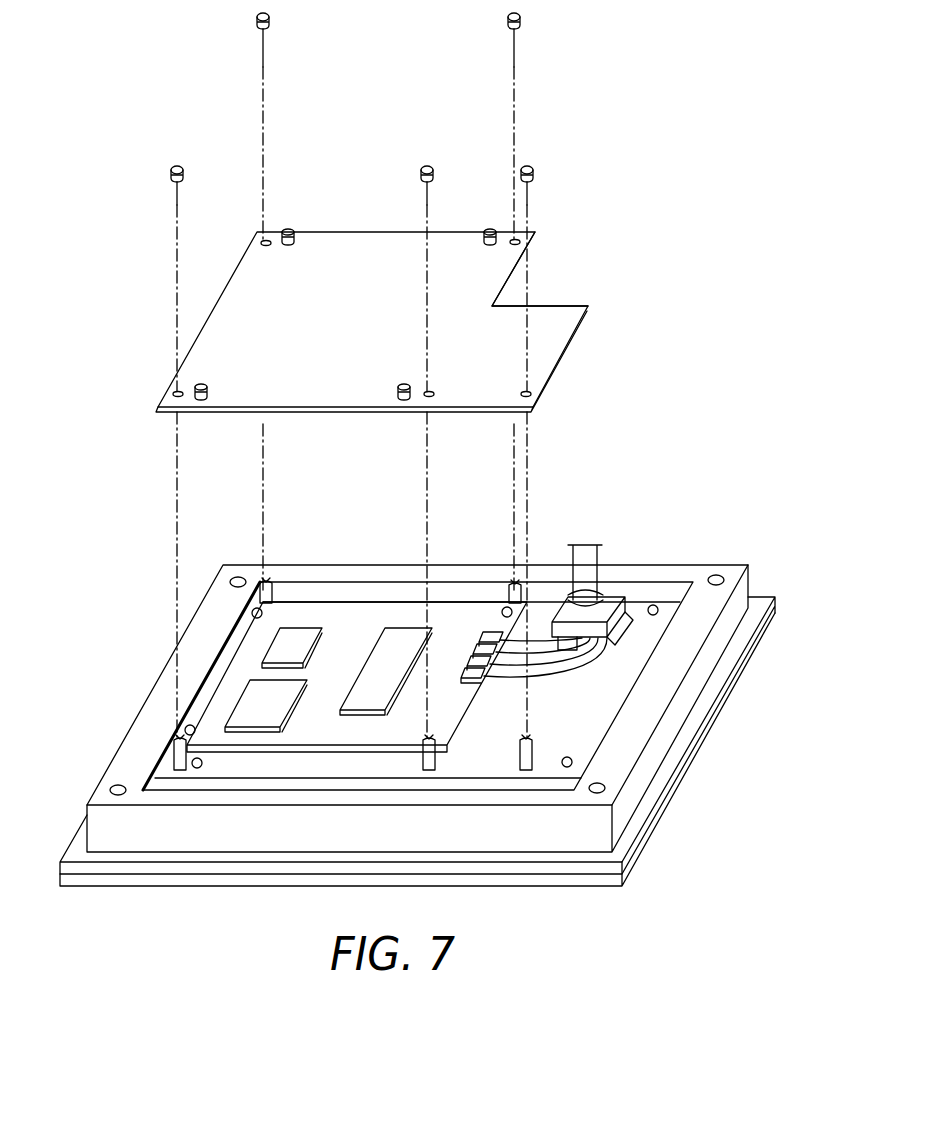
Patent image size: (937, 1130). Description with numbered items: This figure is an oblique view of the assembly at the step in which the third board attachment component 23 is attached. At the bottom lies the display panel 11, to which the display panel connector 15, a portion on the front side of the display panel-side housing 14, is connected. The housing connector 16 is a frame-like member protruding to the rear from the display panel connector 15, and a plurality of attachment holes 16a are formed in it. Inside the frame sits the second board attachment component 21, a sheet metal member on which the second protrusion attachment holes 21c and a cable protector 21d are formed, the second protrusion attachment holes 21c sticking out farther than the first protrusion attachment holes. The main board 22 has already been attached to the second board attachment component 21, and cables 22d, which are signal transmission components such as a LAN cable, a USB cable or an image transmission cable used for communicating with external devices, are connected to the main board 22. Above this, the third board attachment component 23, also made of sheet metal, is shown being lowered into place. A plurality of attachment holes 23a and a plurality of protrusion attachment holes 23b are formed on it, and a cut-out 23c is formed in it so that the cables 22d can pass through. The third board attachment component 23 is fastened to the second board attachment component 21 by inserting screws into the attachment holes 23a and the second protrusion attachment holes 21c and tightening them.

The display panel 11 is at (668, 823).
The display panel-side housing 14 is at (792, 565).
The display panel connector 15 is at (760, 594).
The housing connector 16 is at (665, 572).
The attachment holes 16a is at (716, 574).
The second board attachment component 21 is at (631, 684).
The second protrusion attachment holes 21c is at (276, 598).
The cable protector 21d is at (618, 581).
The main board 22 is at (409, 595).
The cables 22d is at (587, 672).
The third board attachment component 23 is at (380, 219).
The attachment holes 23a is at (432, 393).
The protrusion attachment holes 23b is at (295, 240).
The cut-out 23c is at (546, 304).